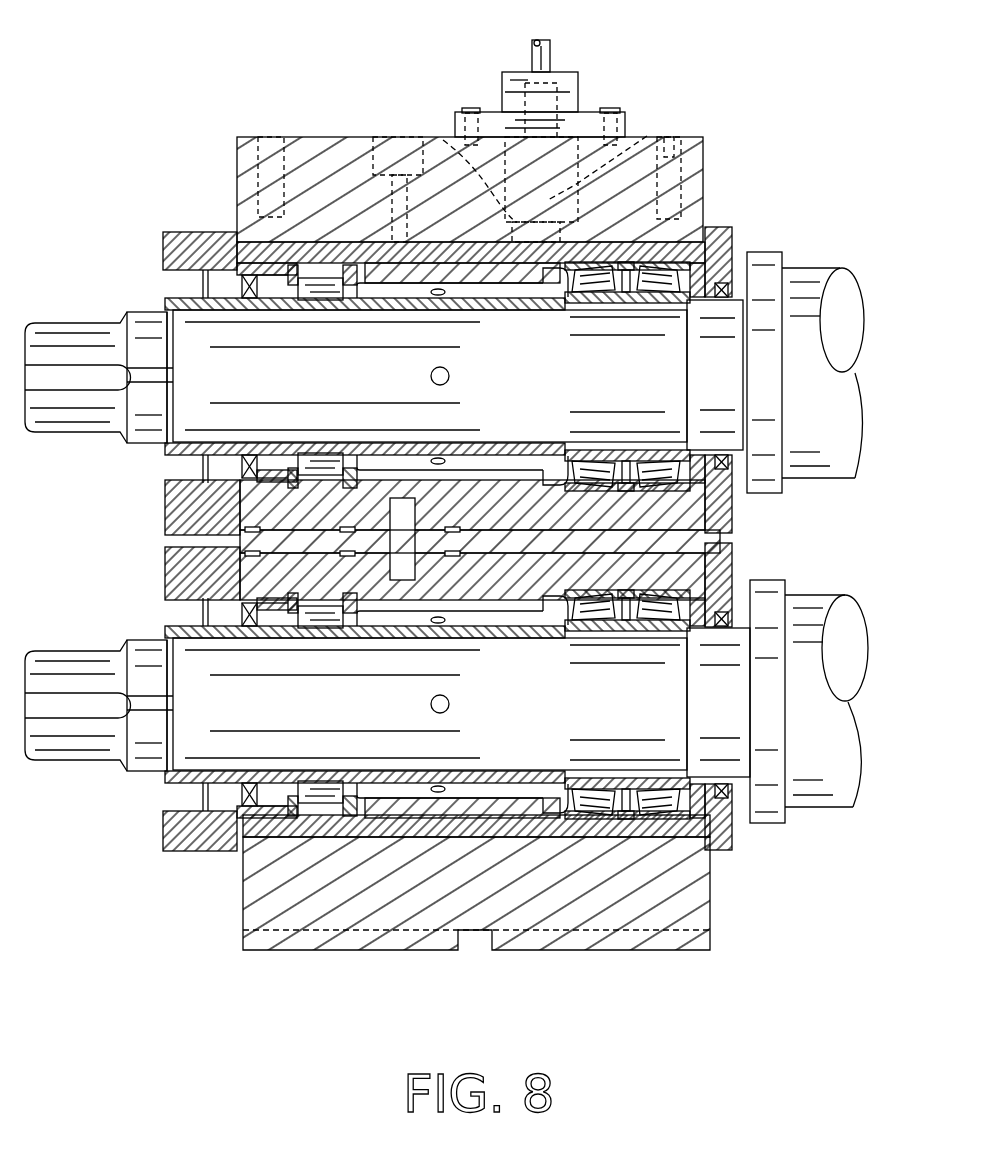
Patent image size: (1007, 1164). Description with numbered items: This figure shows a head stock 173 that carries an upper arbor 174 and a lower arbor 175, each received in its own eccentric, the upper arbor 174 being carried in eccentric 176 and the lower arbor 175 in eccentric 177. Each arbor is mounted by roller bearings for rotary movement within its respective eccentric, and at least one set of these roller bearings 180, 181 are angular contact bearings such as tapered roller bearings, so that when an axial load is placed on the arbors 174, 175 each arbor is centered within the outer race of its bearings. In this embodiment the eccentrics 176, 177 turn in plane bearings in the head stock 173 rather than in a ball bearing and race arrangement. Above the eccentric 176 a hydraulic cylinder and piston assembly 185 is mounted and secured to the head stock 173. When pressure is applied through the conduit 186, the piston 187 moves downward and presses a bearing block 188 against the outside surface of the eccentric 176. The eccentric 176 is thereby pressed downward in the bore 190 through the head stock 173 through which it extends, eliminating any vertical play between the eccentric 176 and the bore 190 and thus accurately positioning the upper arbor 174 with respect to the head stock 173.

The head stock 173 is at (342, 124).
The upper arbor 174 is at (802, 267).
The lower arbor 175 is at (798, 596).
The eccentric 176 is at (664, 254).
The eccentric 177 is at (733, 510).
The roller bearing 180 is at (705, 227).
The roller bearing 181 is at (660, 828).
The hydraulic cylinder and piston assembly 185 is at (600, 103).
The conduit 186 is at (542, 37).
The piston 187 is at (647, 136).
The bearing block 188 is at (443, 140).
The bore 190 is at (238, 256).